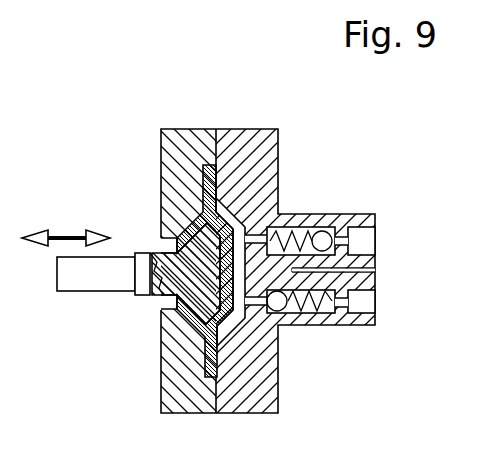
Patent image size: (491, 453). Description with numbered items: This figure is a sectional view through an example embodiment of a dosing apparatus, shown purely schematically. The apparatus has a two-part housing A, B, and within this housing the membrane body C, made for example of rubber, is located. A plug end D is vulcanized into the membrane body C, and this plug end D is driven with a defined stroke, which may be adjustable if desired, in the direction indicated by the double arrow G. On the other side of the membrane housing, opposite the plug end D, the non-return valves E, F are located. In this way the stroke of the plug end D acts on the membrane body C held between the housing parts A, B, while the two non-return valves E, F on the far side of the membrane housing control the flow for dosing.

The housing A is at (187, 137).
The housing B is at (255, 137).
The membrane body C is at (198, 216).
The plug end D is at (147, 284).
The non-return valve E is at (313, 225).
The non-return valve F is at (315, 325).
The double arrow G is at (62, 235).